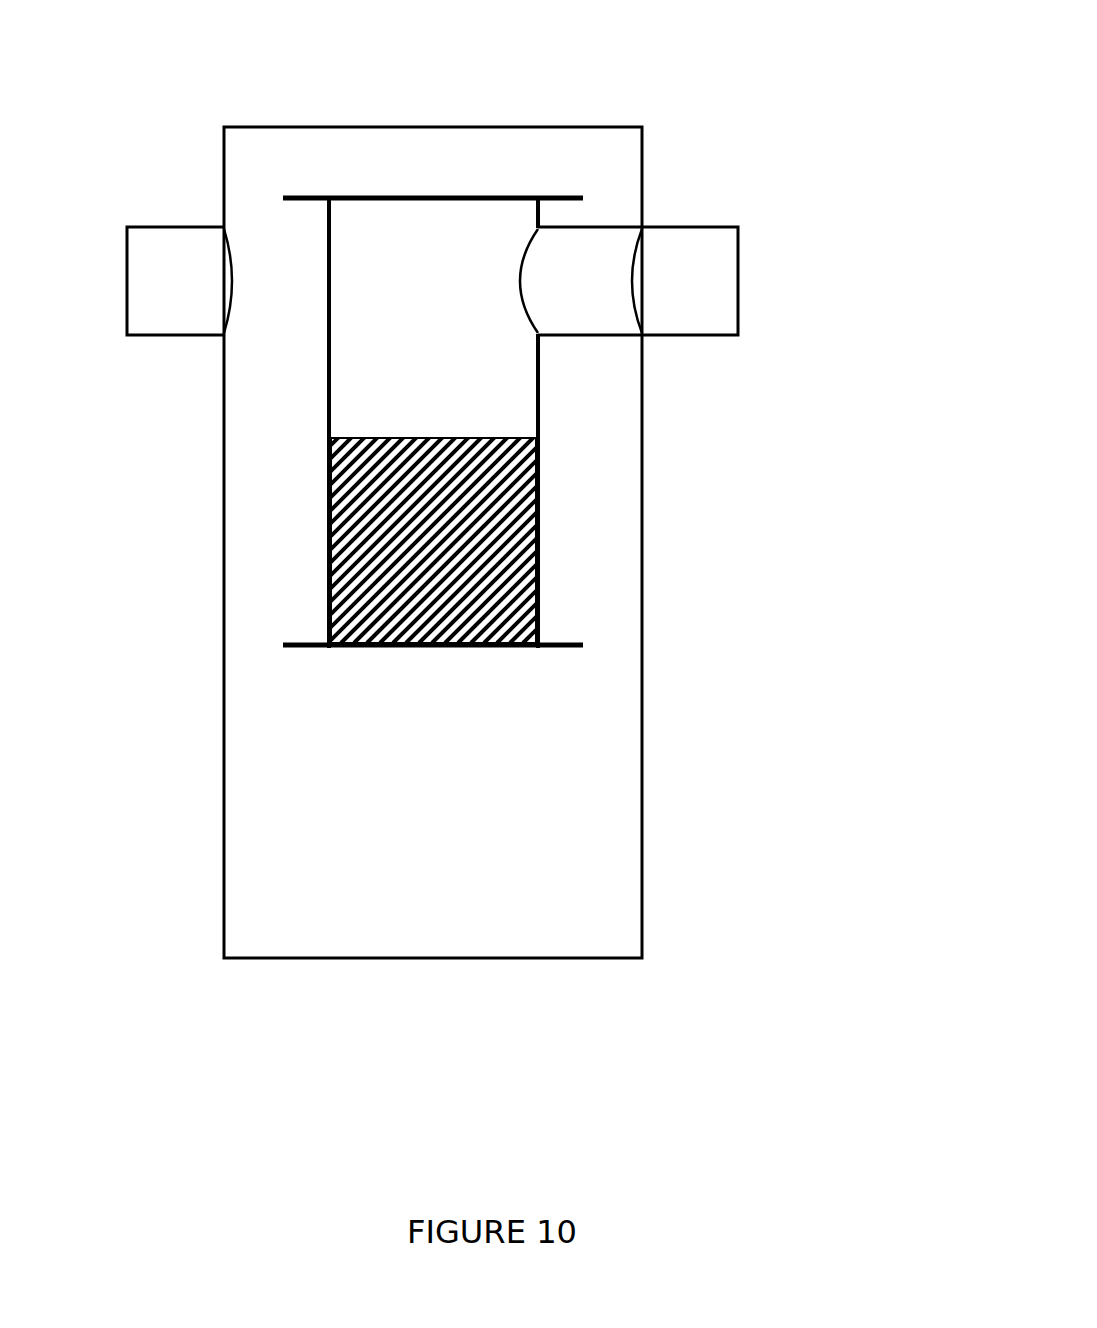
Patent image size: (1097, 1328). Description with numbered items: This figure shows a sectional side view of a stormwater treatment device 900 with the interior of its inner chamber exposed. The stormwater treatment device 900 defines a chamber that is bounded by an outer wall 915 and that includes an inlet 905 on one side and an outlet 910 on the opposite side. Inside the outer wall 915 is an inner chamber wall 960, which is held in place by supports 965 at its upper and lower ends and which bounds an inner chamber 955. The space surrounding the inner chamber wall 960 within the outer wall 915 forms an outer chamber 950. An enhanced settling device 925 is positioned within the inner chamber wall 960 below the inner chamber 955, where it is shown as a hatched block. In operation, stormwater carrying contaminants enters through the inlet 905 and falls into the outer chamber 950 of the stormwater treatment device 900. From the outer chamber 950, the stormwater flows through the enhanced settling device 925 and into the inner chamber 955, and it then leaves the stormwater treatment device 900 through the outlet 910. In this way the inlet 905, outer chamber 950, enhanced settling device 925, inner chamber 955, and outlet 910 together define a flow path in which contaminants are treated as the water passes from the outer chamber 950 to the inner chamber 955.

The stormwater treatment device 900 is at (868, 1068).
The inlet 905 is at (127, 227).
The outlet 910 is at (732, 227).
The wall 915 is at (643, 872).
The enhanced settling device 925 is at (512, 569).
The outer chamber 950 is at (433, 802).
The inner chamber 955 is at (434, 319).
The inner chamber wall 960 is at (542, 393).
The supports 965 is at (578, 196).